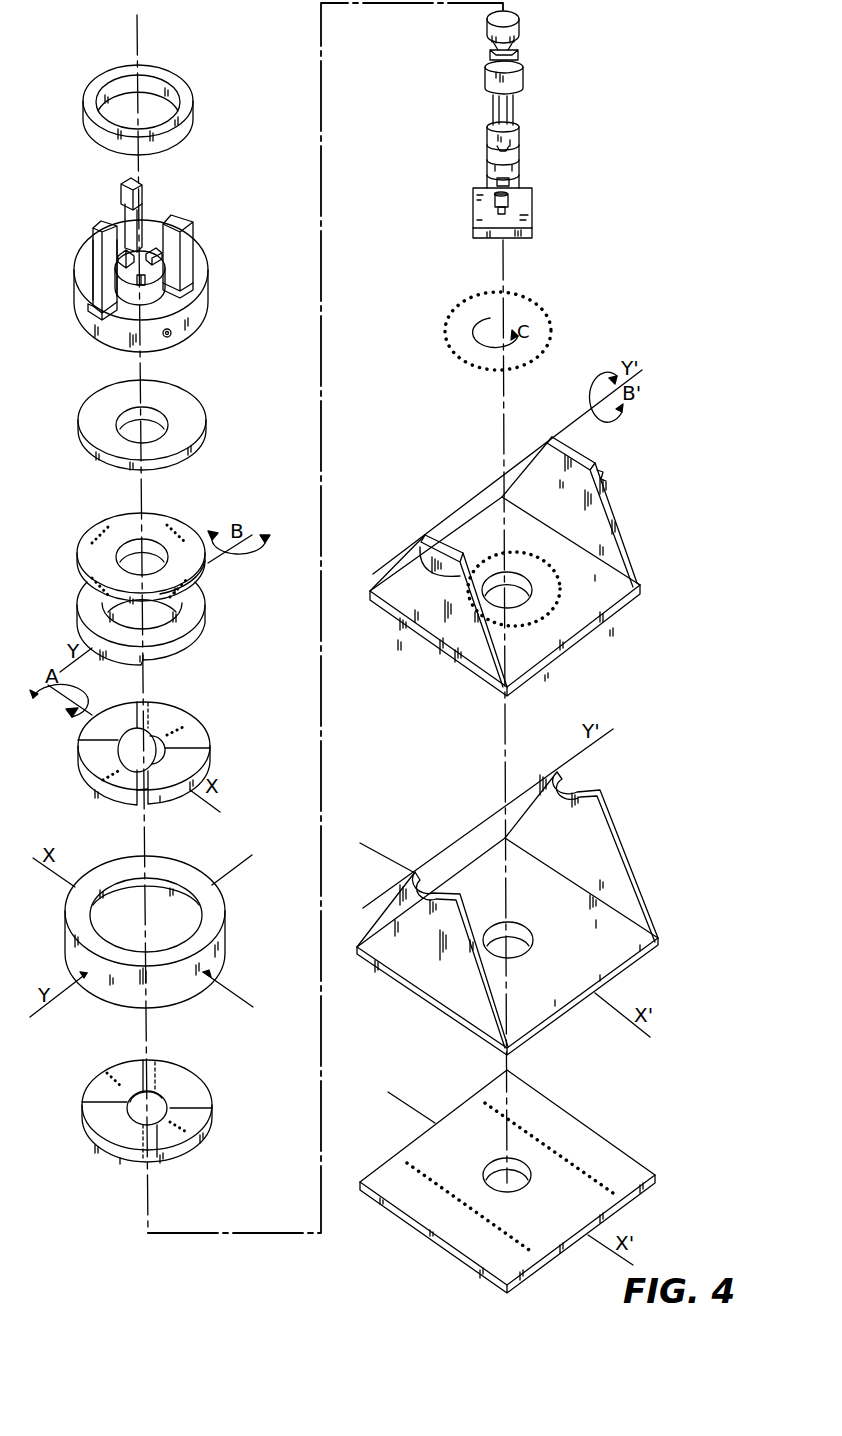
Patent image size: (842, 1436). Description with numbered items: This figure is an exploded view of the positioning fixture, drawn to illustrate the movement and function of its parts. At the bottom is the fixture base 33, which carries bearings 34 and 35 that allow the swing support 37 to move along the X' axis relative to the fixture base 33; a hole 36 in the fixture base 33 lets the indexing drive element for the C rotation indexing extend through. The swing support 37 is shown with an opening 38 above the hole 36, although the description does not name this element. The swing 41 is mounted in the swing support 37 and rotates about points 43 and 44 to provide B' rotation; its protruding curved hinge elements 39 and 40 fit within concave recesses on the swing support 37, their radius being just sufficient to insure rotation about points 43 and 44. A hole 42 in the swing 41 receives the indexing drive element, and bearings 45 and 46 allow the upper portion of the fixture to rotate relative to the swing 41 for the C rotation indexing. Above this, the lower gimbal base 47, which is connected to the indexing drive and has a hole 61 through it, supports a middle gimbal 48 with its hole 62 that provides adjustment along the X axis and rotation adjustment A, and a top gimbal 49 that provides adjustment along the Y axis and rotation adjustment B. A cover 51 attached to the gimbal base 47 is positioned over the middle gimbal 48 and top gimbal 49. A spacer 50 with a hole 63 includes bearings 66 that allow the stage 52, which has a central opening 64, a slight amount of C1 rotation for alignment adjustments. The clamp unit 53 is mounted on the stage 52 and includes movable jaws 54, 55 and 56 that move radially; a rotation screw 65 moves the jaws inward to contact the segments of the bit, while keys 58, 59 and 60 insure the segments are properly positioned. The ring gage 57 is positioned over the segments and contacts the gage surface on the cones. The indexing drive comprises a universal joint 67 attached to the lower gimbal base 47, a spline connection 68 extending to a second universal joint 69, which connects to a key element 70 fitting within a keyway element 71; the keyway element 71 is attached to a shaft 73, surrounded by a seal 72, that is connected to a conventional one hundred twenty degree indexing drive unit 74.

The fixture base 33 is at (478, 1240).
The bearing 34 is at (528, 1252).
The bearing 35 is at (585, 1170).
The hole 36 is at (518, 1180).
The swing support 37 is at (620, 943).
The hole 38 is at (517, 943).
The curved hinge element 39 is at (422, 548).
The curved hinge element 40 is at (600, 466).
The swing 41 is at (595, 605).
The hole 42 is at (523, 593).
The point 43 is at (443, 520).
The point 44 is at (577, 422).
The bearing 45 is at (558, 583).
The bearing 46 is at (545, 313).
The lower gimbal base 47 is at (195, 1123).
The middle gimbal 48 is at (192, 738).
The top gimbal 49 is at (185, 622).
The spacer 50 is at (157, 531).
The cover 51 is at (75, 957).
The stage 52 is at (184, 426).
The clamp unit 53 is at (180, 302).
The movable jaw 54 is at (183, 242).
The movable jaw 55 is at (97, 272).
The movable jaw 56 is at (138, 190).
The ring gage 57 is at (178, 90).
The key 58 is at (157, 297).
The key 59 is at (101, 231).
The key 60 is at (156, 251).
The hole 61 is at (143, 1117).
The hole 62 is at (133, 749).
The hole 63 is at (130, 560).
The central opening 64 is at (128, 424).
The rotation screw 65 is at (170, 337).
The bearing 66 is at (192, 586).
The universal joint 67 is at (522, 28).
The spline connection 68 is at (522, 80).
The universal joint 69 is at (522, 150).
The key element 70 is at (519, 170).
The keyway element 71 is at (521, 180).
The seal 72 is at (512, 200).
The shaft 73 is at (507, 210).
The indexing drive unit 74 is at (533, 232).